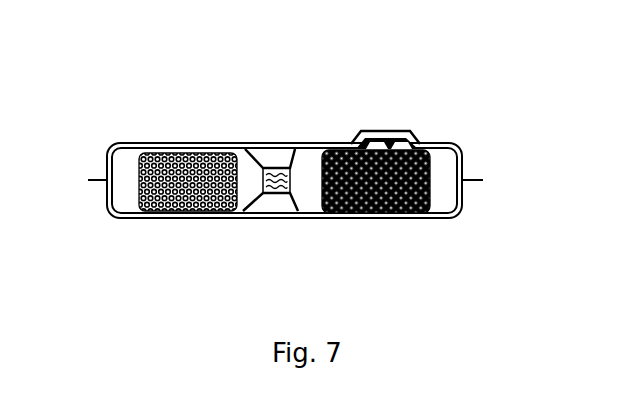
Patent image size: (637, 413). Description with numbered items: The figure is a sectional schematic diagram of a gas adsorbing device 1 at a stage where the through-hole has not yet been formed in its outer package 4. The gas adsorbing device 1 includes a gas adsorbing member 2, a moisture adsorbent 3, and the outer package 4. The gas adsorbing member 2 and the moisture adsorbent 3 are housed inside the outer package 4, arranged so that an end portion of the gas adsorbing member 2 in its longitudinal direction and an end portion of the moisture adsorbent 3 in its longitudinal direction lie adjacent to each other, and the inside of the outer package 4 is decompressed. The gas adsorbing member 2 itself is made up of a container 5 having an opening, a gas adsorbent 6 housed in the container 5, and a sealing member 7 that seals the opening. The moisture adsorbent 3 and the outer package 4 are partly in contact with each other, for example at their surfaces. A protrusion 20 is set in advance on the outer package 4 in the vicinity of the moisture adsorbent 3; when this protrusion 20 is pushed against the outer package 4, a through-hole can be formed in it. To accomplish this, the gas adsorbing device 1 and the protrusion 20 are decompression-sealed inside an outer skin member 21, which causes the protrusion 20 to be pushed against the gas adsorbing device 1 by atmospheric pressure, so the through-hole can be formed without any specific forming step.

The gas adsorbing device 1 is at (165, 133).
The gas adsorbing member 2 is at (118, 158).
The moisture adsorbent 3 is at (341, 165).
The outer package 4 is at (261, 156).
The container 5 is at (262, 195).
The gas adsorbent 6 is at (188, 200).
The sealing member 7 is at (273, 166).
The protrusion 20 is at (393, 139).
The outer skin member 21 is at (413, 137).